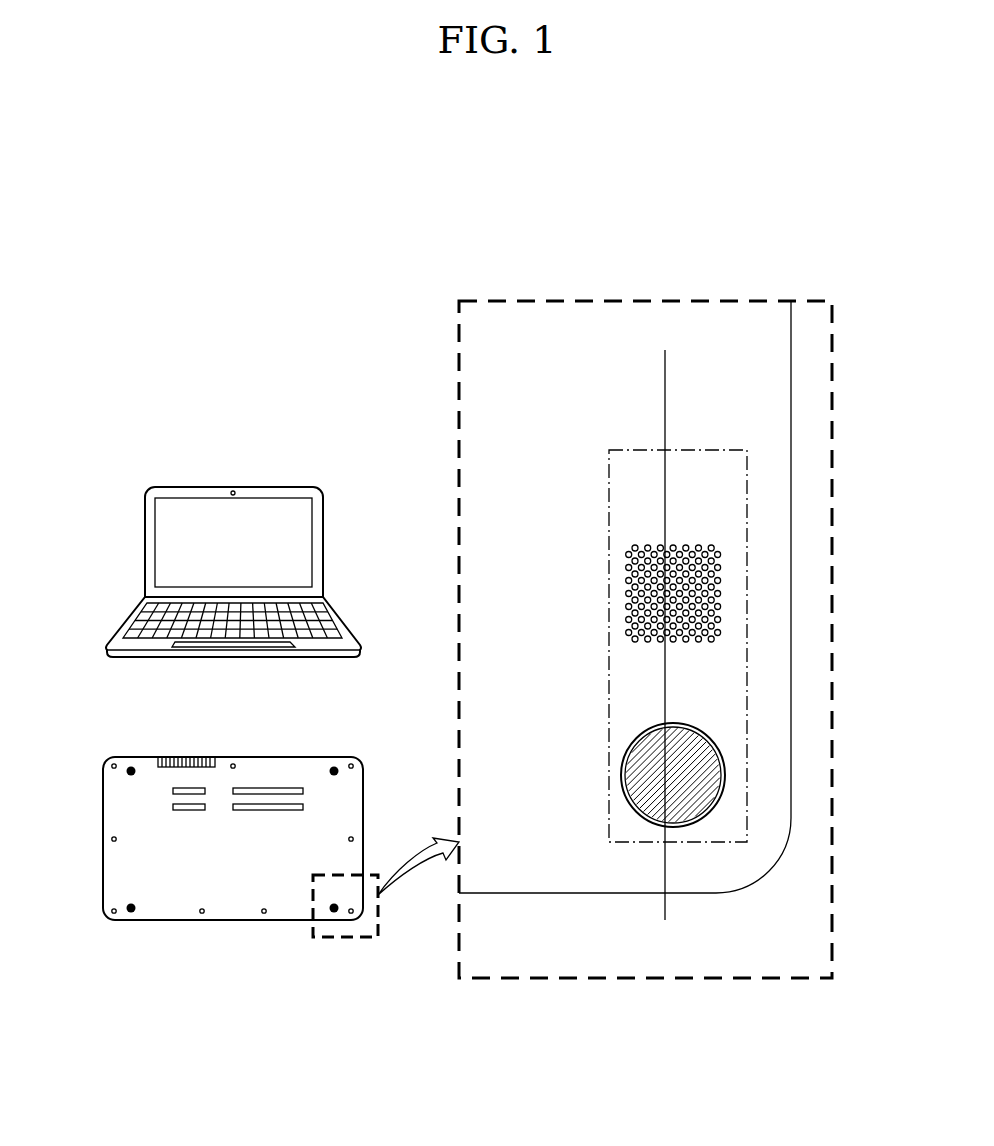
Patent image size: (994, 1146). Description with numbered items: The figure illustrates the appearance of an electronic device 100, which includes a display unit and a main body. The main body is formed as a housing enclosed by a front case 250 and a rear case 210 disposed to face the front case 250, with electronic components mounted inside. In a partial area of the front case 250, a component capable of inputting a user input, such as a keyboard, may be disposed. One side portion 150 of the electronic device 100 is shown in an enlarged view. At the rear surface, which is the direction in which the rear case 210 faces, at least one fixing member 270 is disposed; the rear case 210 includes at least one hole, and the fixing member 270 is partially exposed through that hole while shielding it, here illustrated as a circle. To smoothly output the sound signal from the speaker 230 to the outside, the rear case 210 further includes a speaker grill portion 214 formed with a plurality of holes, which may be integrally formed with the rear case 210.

The electronic device 100 is at (97, 387).
The one side portion 150 is at (792, 271).
The rear case 210 is at (103, 836).
The speaker grill portion 214 is at (720, 585).
The speaker 230 is at (762, 517).
The front case 250 is at (127, 624).
The fixing member 270 is at (693, 773).